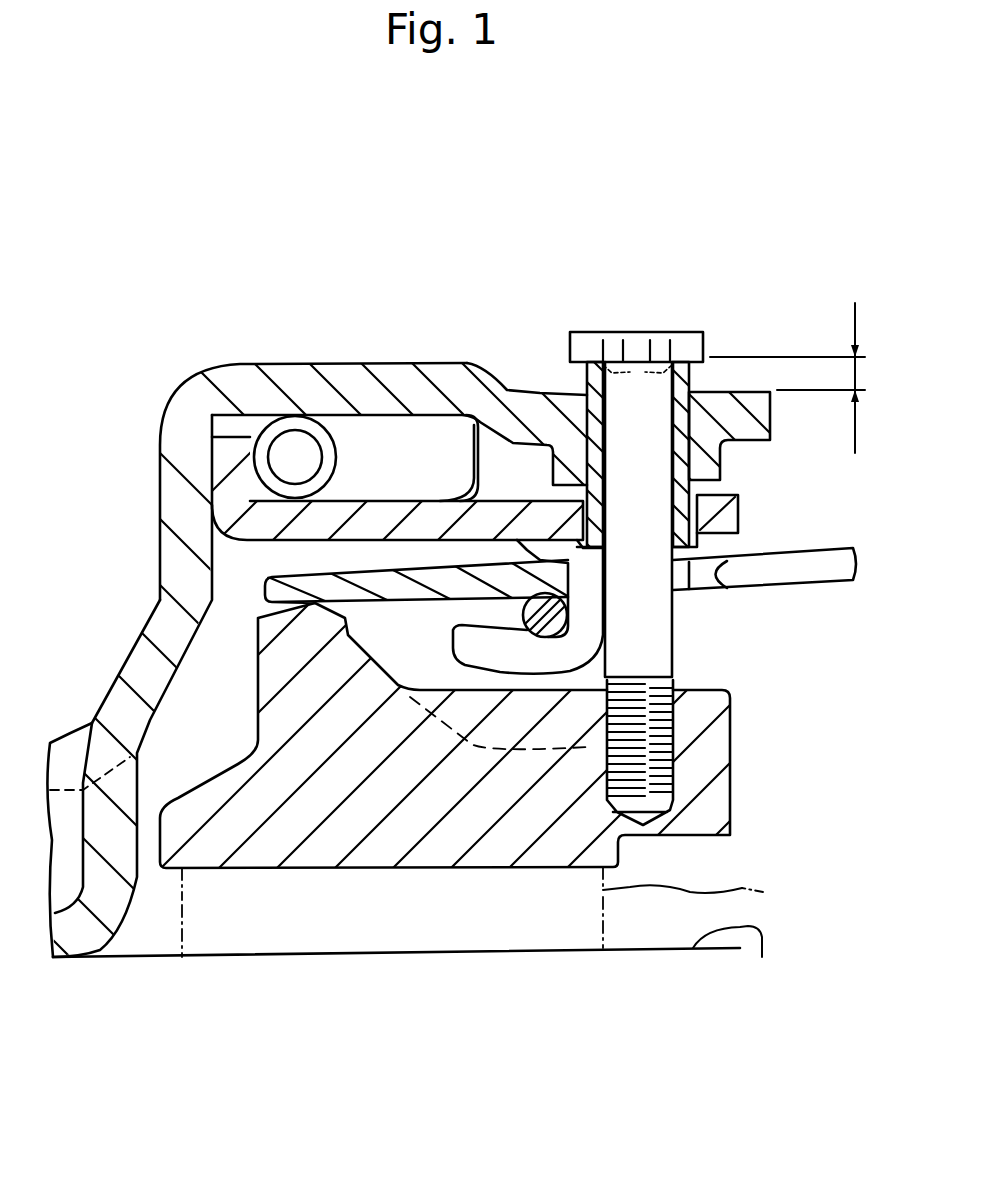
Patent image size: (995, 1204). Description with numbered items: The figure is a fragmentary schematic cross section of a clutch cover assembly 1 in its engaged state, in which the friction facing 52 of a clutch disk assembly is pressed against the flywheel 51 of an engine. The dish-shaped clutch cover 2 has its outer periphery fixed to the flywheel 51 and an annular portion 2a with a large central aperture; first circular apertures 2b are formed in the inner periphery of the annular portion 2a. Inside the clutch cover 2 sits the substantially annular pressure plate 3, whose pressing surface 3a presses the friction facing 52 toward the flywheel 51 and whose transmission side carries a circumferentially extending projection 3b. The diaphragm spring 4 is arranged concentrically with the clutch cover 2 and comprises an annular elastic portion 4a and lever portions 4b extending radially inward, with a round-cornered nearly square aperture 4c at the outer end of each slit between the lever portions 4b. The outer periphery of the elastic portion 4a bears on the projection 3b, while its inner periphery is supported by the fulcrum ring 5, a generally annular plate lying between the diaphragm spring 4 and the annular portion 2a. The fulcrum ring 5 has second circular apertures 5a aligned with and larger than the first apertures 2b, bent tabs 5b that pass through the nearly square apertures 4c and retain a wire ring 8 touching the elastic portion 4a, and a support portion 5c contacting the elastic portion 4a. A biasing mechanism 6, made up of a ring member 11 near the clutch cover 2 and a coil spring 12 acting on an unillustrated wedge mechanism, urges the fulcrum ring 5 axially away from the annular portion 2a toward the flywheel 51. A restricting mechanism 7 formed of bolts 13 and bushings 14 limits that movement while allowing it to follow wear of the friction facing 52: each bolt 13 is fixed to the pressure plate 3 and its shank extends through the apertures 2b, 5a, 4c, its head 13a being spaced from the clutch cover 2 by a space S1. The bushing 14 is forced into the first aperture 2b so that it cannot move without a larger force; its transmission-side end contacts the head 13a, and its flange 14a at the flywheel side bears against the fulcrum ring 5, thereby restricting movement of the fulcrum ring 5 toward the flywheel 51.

The clutch cover assembly 1 is at (600, 207).
The clutch cover 2 is at (206, 362).
The annular portion 2a is at (407, 380).
The first circular apertures 2b is at (538, 553).
The pressure plate 3 is at (373, 790).
The pressing surface 3a is at (420, 870).
The projection 3b is at (310, 633).
The diaphragm spring 4 is at (729, 596).
The annular elastic portion 4a is at (405, 588).
The lever portions 4b is at (800, 560).
The nearly square aperture 4c is at (693, 574).
The fulcrum ring 5 is at (427, 513).
The second circular apertures 5a is at (681, 511).
The bent tabs 5b is at (523, 652).
The support portion 5c is at (540, 447).
The biasing mechanism 6 is at (301, 403).
The restricting mechanism 7 is at (718, 327).
The wire ring 8 is at (530, 613).
The ring member 11 is at (363, 457).
The coil spring 12 is at (268, 423).
The bolt 13 is at (628, 480).
The head 13a is at (590, 345).
The bushing 14 is at (700, 432).
The flange 14a is at (728, 562).
The flywheel 51 is at (762, 957).
The friction facing 52 is at (763, 892).
The space S1 is at (810, 378).